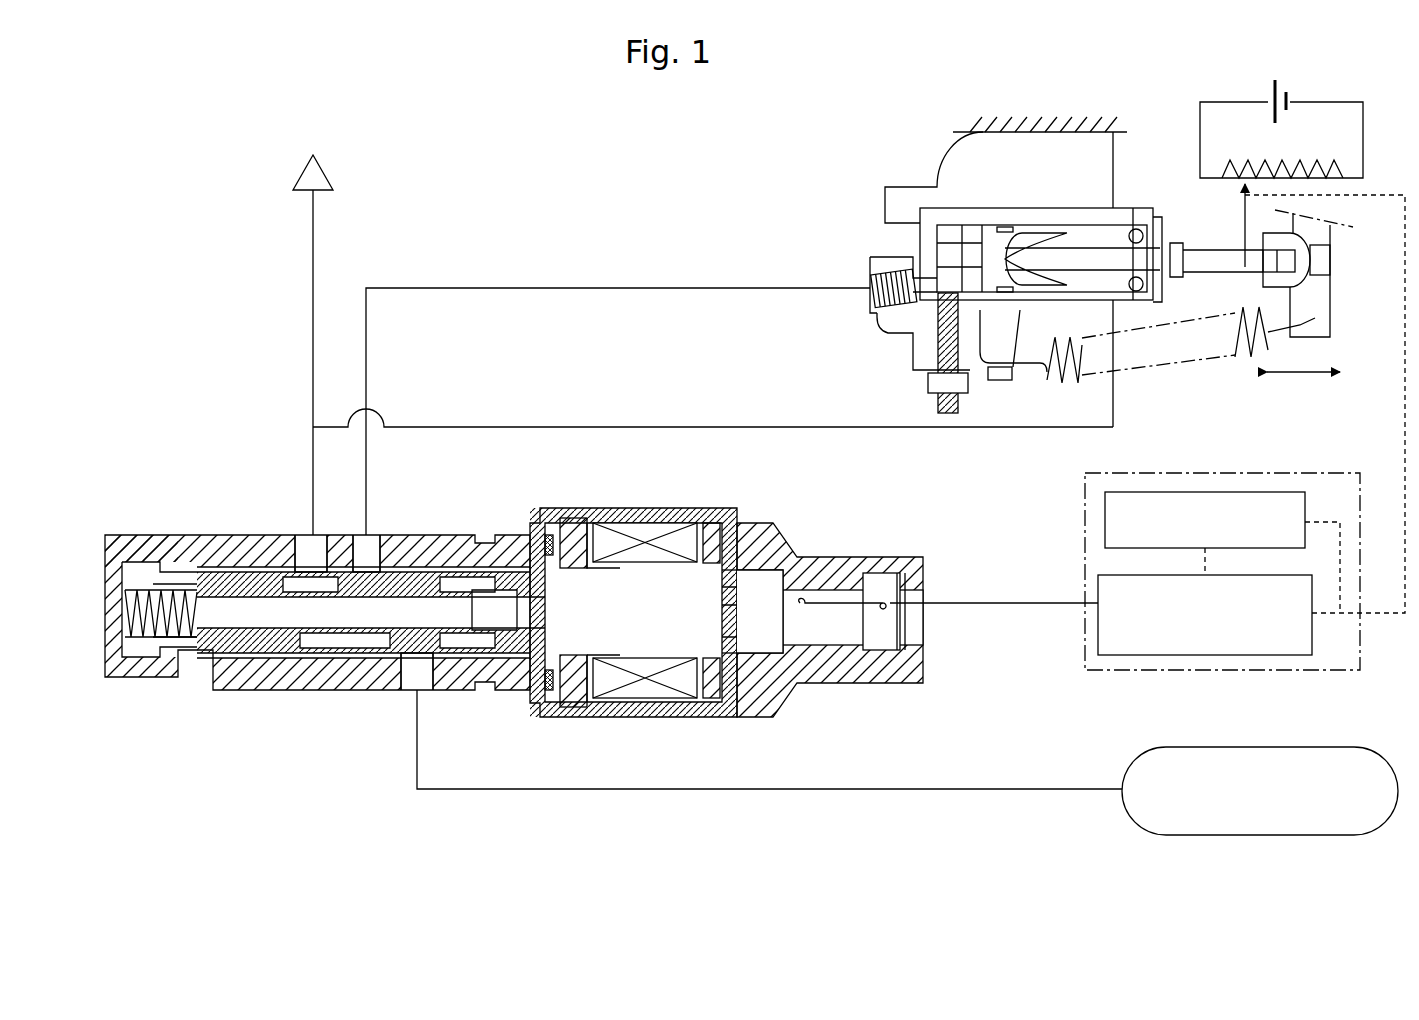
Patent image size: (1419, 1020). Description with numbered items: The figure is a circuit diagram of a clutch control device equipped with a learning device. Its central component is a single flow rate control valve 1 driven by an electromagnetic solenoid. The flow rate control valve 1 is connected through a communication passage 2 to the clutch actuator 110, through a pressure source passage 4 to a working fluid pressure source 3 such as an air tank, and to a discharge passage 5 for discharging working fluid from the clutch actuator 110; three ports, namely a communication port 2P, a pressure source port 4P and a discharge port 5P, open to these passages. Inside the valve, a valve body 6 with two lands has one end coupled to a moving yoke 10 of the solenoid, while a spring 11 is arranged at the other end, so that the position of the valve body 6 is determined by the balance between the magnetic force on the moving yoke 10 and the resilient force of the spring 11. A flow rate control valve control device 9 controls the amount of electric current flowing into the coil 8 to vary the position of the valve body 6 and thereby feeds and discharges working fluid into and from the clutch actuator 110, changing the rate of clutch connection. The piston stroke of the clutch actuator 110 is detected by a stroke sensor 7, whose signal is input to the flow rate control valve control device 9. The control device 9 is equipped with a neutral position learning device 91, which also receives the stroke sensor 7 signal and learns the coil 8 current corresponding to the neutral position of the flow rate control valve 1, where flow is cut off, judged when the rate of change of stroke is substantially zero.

The flow rate control valve 1 is at (262, 692).
The communication passage 2 is at (610, 288).
The communication port 2P is at (372, 535).
The working fluid pressure source 3 is at (1313, 747).
The pressure source passage 4 is at (885, 789).
The pressure source port 4P is at (407, 690).
The discharge passage 5 is at (313, 222).
The discharge port 5P is at (305, 535).
The valve body 6 is at (427, 585).
The stroke sensor 7 is at (1230, 190).
The coil 8 is at (650, 540).
The flow rate control valve control device 9 is at (1222, 545).
The moving yoke 10 is at (650, 700).
The spring 11 is at (133, 650).
The neutral position learning device 91 is at (1258, 492).
The clutch actuator 110 is at (1022, 208).